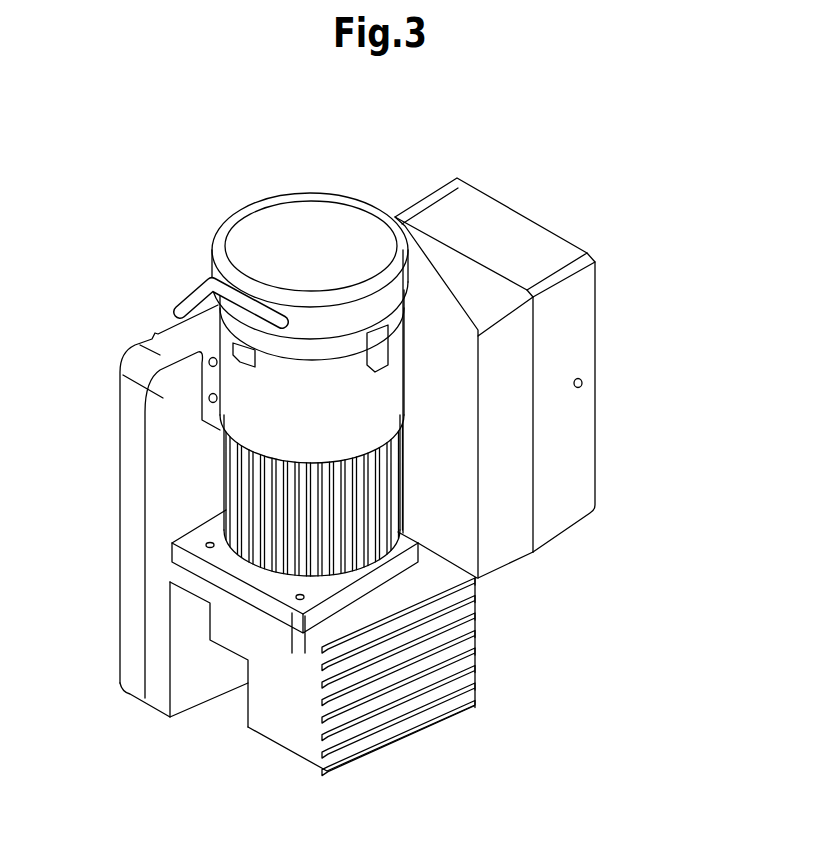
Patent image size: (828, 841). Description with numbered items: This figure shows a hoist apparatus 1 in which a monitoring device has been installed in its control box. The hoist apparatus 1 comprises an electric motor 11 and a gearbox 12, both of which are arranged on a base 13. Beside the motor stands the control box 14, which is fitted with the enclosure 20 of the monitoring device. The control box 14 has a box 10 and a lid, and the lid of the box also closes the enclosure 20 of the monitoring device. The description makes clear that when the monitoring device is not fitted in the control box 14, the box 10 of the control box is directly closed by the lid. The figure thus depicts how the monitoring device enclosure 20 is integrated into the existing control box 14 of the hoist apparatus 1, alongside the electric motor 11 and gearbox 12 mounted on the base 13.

The hoist apparatus 1 is at (652, 302).
The box 10 is at (505, 542).
The electric motor 11 is at (292, 212).
The gearbox 12 is at (285, 720).
The base 13 is at (130, 475).
The control box 14 is at (533, 218).
The enclosure 20 is at (575, 453).